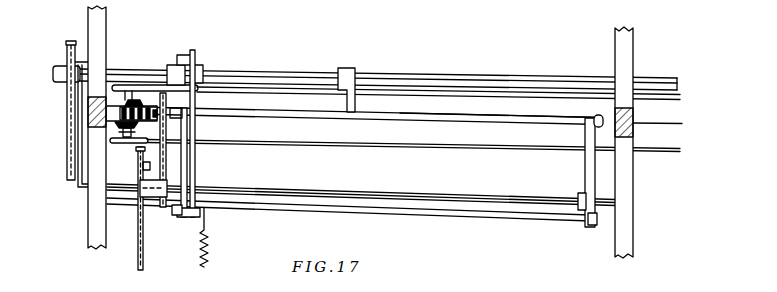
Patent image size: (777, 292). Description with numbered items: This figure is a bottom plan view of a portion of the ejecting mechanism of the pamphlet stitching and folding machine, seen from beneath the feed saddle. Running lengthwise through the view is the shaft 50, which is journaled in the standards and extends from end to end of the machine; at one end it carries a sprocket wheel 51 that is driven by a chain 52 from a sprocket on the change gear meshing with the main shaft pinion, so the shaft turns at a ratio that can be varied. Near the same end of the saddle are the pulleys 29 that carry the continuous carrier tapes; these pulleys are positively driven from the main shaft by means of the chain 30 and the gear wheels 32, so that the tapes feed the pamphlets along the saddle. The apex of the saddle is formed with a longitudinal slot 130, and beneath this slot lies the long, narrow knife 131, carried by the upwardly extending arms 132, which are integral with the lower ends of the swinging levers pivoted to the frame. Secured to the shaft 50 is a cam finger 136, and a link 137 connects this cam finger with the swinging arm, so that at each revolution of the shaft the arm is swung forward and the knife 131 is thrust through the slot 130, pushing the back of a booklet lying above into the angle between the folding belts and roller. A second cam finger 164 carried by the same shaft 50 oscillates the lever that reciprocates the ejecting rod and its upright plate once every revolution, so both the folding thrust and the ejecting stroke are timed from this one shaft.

The pulleys 29 is at (125, 85).
The chain 30 is at (142, 263).
The gear wheels 32 is at (133, 118).
The shaft 50 is at (548, 83).
The sprocket wheel 51 is at (62, 85).
The chain 52 is at (66, 140).
The longitudinal slot 130 is at (350, 115).
The knife 131 is at (425, 118).
The arms 132 is at (187, 165).
The cam finger 136 is at (173, 65).
The link 137 is at (195, 135).
The cam finger 164 is at (356, 107).